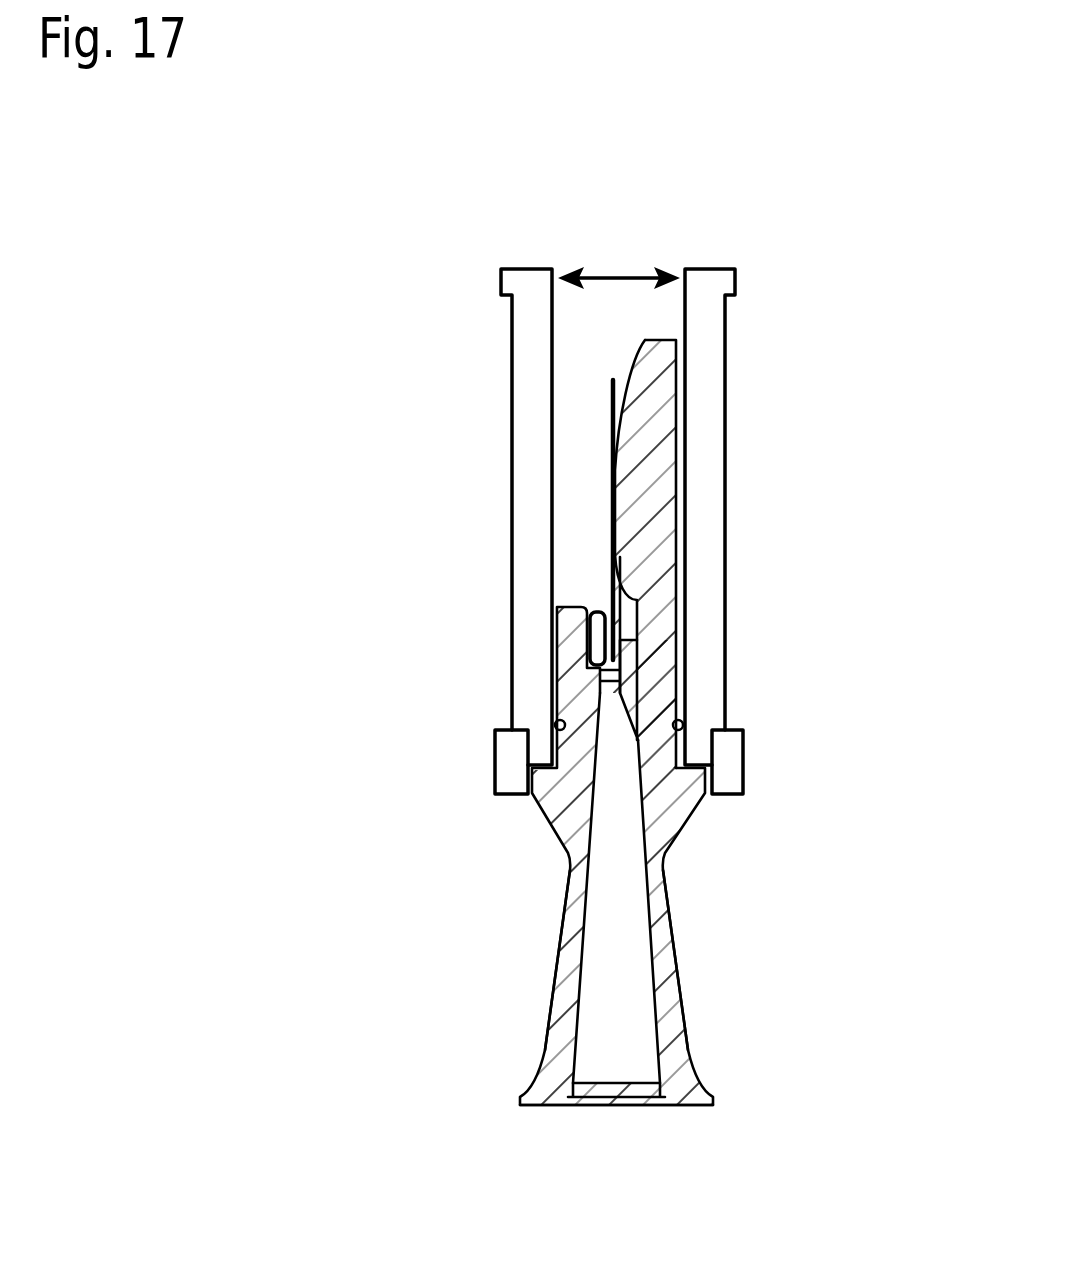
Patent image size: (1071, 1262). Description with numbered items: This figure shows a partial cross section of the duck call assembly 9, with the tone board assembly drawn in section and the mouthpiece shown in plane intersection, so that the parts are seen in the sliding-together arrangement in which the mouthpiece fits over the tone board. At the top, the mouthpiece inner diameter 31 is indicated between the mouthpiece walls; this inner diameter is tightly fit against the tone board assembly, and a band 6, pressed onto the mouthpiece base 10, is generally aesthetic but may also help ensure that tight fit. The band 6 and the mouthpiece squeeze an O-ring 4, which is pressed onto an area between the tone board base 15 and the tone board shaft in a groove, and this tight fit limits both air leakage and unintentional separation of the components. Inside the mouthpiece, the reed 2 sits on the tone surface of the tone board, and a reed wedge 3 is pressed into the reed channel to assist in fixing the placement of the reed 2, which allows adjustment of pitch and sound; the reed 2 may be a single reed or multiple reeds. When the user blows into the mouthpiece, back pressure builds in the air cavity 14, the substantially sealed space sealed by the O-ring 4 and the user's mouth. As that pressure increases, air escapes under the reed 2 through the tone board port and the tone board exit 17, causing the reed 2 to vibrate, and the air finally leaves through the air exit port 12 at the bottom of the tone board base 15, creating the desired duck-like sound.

The reed 2 is at (610, 537).
The reed wedge 3 is at (597, 628).
The O-ring 4 is at (682, 707).
The band 6 is at (506, 750).
The duck call assembly 9 is at (810, 797).
The mouthpiece base 10 is at (700, 433).
The air exit port 12 is at (635, 1117).
The air cavity 14 is at (588, 447).
The tone board base 15 is at (568, 1035).
The tone board exit 17 is at (607, 923).
The mouthpiece inner diameter 31 is at (618, 275).